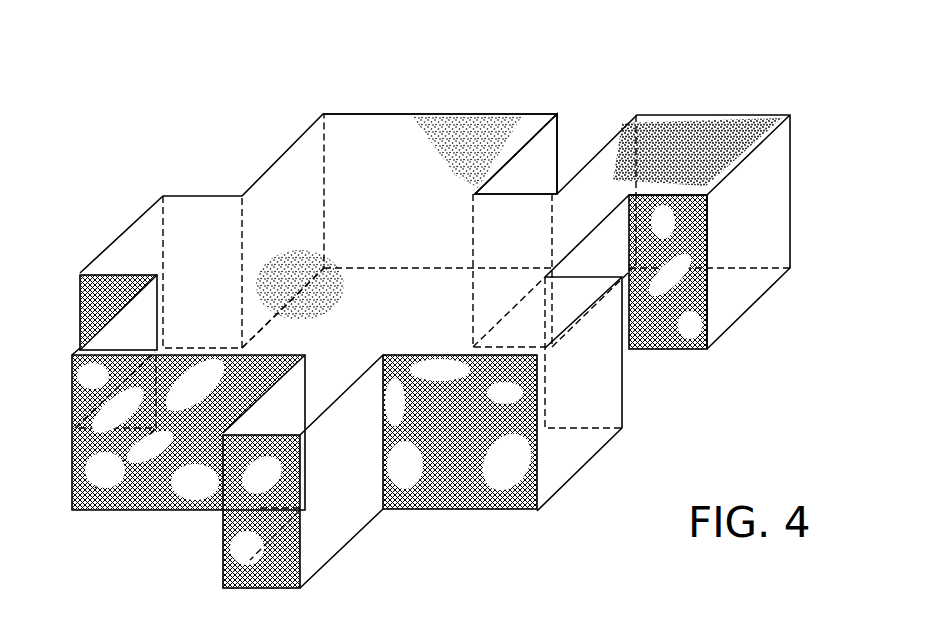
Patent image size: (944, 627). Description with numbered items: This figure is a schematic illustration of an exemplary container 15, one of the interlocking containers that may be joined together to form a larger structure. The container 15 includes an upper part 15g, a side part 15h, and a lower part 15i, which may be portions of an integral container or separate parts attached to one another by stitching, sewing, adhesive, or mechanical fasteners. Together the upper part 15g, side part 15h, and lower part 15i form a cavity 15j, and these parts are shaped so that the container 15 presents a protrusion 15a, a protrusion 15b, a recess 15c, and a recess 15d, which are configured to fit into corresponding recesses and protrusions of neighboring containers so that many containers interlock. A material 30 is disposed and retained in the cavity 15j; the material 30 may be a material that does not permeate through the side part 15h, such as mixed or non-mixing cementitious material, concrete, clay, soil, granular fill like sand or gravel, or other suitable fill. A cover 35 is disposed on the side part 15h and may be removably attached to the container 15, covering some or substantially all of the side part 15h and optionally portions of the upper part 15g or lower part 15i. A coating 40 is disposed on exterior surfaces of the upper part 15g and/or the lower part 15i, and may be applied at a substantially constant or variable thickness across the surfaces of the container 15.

The container 15 is at (407, 133).
The protrusion 15a is at (242, 478).
The protrusion 15b is at (135, 248).
The recess 15c is at (663, 323).
The recess 15d is at (540, 168).
The upper part 15g is at (355, 150).
The side part 15h is at (755, 220).
The lower part 15i is at (507, 508).
The cavity 15j is at (357, 290).
The material 30 is at (297, 287).
The cover 35 is at (447, 437).
The coating 40 is at (470, 150).